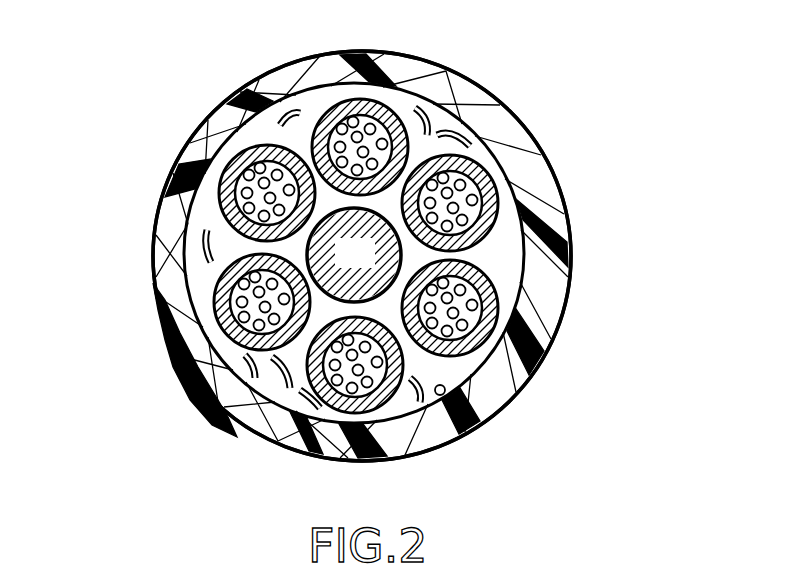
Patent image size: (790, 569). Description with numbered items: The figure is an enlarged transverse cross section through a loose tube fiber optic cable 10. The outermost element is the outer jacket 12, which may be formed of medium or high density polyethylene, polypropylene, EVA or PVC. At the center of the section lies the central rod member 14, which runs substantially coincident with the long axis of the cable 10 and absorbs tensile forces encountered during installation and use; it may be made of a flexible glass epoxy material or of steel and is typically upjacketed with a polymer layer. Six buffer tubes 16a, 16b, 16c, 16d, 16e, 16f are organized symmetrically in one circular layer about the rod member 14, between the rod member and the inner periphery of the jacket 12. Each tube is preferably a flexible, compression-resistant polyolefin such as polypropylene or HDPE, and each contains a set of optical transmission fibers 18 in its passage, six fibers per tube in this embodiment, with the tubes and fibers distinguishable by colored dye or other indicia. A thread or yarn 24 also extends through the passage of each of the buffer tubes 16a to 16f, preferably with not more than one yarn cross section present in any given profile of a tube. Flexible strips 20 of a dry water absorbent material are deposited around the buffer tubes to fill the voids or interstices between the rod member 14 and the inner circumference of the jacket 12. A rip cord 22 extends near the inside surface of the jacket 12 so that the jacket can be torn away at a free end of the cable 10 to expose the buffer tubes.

The loose tube fiber optic cable 10 is at (150, 76).
The outer jacket 12 is at (567, 303).
The central rod member 14 is at (372, 269).
The buffer tube 16a is at (405, 100).
The buffer tube 16b is at (490, 150).
The buffer tube 16c is at (500, 298).
The buffer tube 16d is at (400, 412).
The buffer tube 16e is at (178, 340).
The buffer tube 16f is at (192, 150).
The optical transmission fibers 18 is at (280, 177).
The flexible strips 20 is at (287, 117).
The rip cord 22 is at (505, 412).
The thread or yarn 24 is at (456, 135).